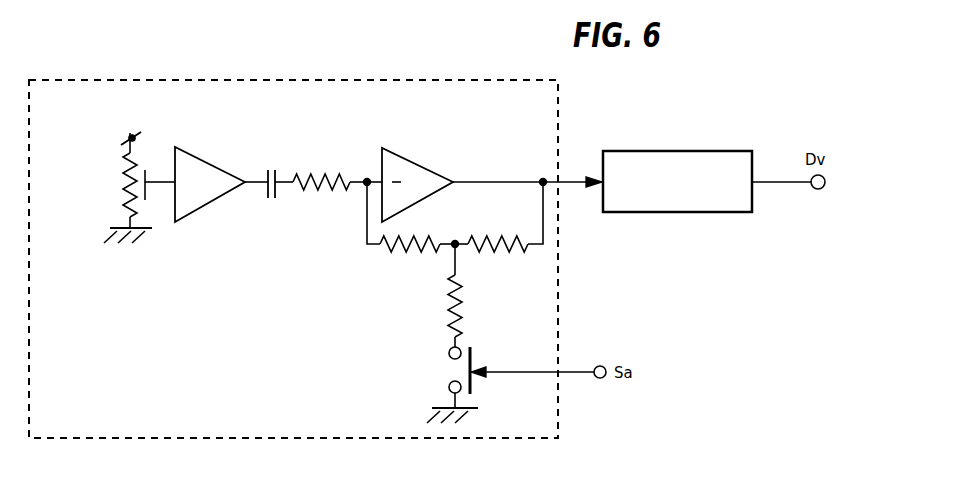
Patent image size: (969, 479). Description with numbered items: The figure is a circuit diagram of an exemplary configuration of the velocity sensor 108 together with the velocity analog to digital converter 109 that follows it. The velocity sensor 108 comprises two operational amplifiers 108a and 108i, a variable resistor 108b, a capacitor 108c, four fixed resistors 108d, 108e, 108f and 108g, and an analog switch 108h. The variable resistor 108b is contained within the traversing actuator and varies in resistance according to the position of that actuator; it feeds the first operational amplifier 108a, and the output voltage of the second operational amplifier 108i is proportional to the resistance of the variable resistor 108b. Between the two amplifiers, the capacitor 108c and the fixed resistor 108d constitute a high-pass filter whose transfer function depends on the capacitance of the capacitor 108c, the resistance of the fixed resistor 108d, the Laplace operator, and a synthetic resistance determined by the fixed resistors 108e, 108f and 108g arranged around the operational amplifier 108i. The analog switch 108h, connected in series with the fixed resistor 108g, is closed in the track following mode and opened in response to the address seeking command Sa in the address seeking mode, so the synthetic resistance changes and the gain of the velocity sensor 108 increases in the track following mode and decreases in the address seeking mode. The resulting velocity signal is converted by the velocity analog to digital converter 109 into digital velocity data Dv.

The velocity sensor 108 is at (337, 80).
The operational amplifier 108a is at (203, 162).
The variable resistor 108b is at (128, 170).
The capacitor 108c is at (268, 200).
The fixed resistor 108d is at (320, 193).
The fixed resistor 108e is at (428, 250).
The fixed resistor 108f is at (493, 249).
The fixed resistor 108g is at (453, 305).
The analog switch 108h is at (472, 385).
The operational amplifier 108i is at (403, 153).
The velocity analog to digital (A/D) converter 109 is at (672, 151).